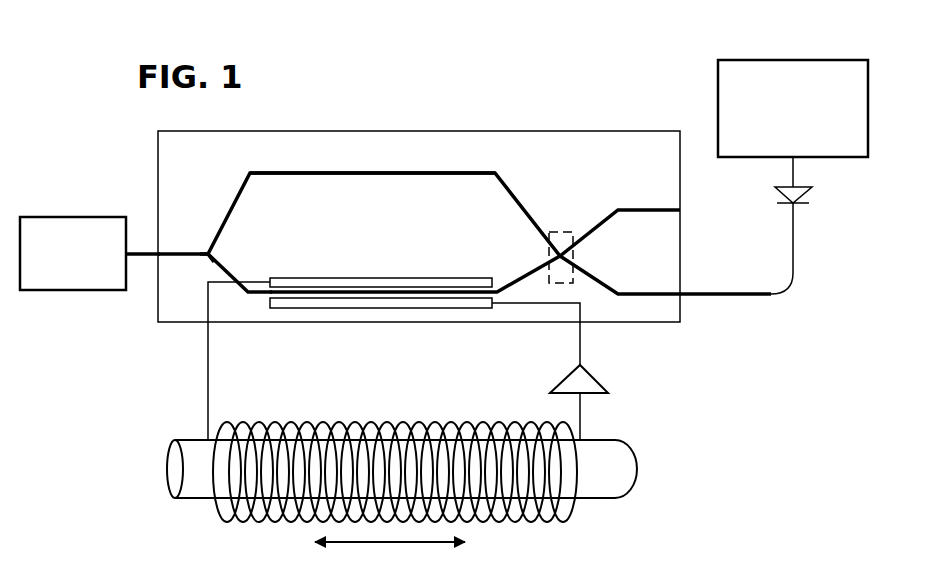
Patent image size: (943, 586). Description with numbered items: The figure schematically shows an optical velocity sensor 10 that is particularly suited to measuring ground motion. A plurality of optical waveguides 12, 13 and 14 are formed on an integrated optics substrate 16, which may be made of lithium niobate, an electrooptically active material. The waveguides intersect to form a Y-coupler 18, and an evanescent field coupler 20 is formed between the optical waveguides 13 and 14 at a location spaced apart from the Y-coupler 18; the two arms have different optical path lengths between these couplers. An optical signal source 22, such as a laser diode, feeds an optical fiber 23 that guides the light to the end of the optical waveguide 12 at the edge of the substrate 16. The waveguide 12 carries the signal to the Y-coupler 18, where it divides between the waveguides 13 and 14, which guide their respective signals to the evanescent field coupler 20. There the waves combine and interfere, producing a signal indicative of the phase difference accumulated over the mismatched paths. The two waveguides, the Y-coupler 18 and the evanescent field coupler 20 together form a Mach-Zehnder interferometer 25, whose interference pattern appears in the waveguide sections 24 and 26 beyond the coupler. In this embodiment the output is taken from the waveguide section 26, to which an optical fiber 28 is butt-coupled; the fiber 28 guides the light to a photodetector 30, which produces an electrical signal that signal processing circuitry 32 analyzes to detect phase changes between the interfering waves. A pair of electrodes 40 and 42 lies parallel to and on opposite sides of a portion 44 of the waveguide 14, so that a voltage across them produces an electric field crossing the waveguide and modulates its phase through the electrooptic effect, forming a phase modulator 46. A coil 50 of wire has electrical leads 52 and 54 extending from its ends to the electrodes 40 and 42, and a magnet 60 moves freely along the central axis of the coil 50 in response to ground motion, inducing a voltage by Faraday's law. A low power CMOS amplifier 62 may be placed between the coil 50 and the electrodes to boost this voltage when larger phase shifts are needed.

The optical velocity sensor 10 is at (725, 426).
The optical waveguide 12 is at (178, 252).
The optical waveguide 13 is at (422, 173).
The optical waveguide 14 is at (207, 263).
The integrated optics substrate 16 is at (311, 131).
The Y-coupler 18 is at (220, 247).
The evanescent field coupler 20 is at (555, 232).
The optical signal source 22 is at (78, 290).
The optical fiber 23 is at (150, 252).
The waveguide section 24 is at (648, 210).
The Mach-Zehnder interferometer 25 is at (391, 168).
The waveguide section 26 is at (660, 296).
The optical fiber 28 is at (735, 297).
The photodetector 30 is at (775, 195).
The signal processing circuitry 32 is at (778, 60).
The electrode 40 is at (383, 278).
The electrode 42 is at (338, 298).
The portion of the optical waveguide 44 is at (455, 298).
The phase modulator 46 is at (425, 235).
The coil 50 is at (362, 425).
The electrical lead 52 is at (208, 368).
The electrical lead 54 is at (579, 345).
The magnet 60 is at (620, 472).
The CMOS amplifier 62 is at (593, 397).